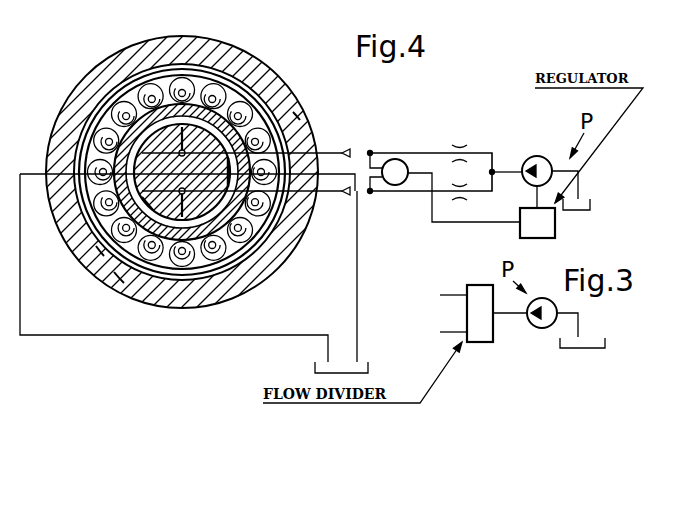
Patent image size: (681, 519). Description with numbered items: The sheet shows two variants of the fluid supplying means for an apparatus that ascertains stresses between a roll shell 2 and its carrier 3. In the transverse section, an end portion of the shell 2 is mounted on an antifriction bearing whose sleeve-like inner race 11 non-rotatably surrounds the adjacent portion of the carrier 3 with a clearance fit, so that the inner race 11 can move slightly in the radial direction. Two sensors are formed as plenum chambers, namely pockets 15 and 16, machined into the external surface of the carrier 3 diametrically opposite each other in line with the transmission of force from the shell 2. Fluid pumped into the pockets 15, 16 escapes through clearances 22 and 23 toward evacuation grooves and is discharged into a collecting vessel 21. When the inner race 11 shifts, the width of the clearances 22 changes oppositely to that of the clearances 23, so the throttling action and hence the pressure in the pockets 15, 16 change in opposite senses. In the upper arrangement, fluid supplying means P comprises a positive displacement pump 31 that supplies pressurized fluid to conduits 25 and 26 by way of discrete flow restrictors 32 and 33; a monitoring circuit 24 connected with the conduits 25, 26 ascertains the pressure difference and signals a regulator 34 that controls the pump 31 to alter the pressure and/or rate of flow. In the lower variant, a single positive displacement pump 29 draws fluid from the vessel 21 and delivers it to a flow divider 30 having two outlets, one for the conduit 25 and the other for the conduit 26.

In FIG. 4, the shell 2 is at (250, 78).
In FIG. 4, the carrier 3 is at (150, 148).
In FIG. 4, the inner race 11 is at (293, 112).
In FIG. 4, the plenum chamber 15 is at (233, 150).
In FIG. 4, the plenum chamber 16 is at (120, 280).
In FIG. 4, the clearance 22 is at (92, 115).
In FIG. 4, the clearance 23 is at (100, 250).
In FIG. 4, the monitoring circuit 24 is at (398, 159).
In FIG. 4, the conduit 25 is at (348, 149).
In FIG. 3, the conduit 25 is at (447, 293).
In FIG. 4, the conduit 26 is at (347, 196).
In FIG. 3, the conduit 26 is at (453, 334).
In FIG. 3, the pump 29 is at (541, 329).
In FIG. 3, the flow divider 30 is at (482, 325).
In FIG. 4, the positive displacement pump 31 is at (541, 156).
In FIG. 4, the flow restrictor 32 is at (460, 143).
In FIG. 4, the flow restrictor 33 is at (460, 200).
In FIG. 4, the regulator 34 is at (530, 212).
In FIG. 4, the collecting vessel 21 is at (591, 204).
In FIG. 3, the collecting vessel 21 is at (607, 343).